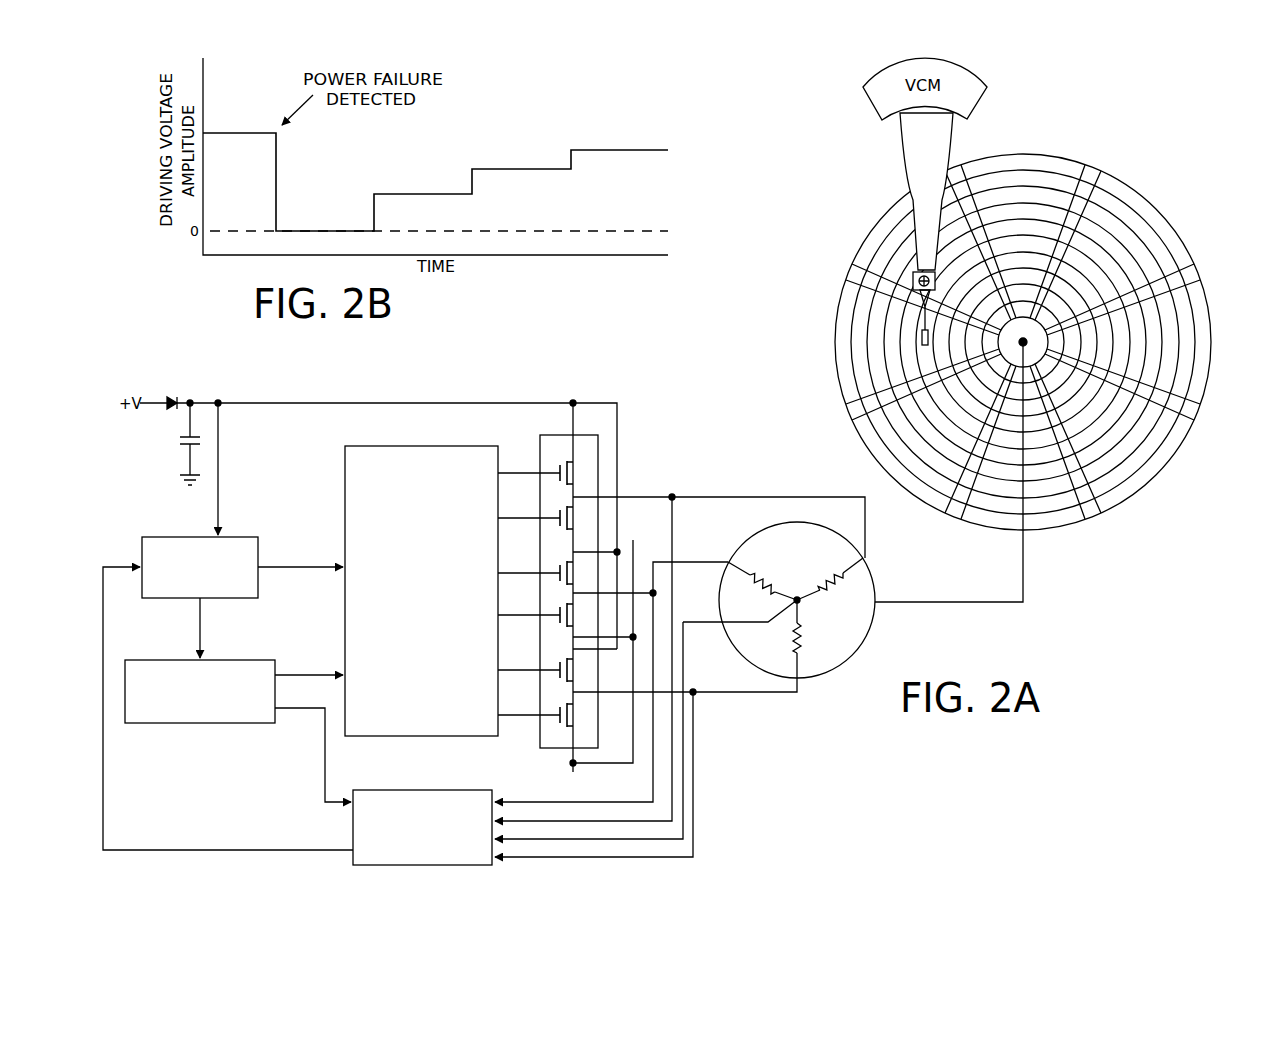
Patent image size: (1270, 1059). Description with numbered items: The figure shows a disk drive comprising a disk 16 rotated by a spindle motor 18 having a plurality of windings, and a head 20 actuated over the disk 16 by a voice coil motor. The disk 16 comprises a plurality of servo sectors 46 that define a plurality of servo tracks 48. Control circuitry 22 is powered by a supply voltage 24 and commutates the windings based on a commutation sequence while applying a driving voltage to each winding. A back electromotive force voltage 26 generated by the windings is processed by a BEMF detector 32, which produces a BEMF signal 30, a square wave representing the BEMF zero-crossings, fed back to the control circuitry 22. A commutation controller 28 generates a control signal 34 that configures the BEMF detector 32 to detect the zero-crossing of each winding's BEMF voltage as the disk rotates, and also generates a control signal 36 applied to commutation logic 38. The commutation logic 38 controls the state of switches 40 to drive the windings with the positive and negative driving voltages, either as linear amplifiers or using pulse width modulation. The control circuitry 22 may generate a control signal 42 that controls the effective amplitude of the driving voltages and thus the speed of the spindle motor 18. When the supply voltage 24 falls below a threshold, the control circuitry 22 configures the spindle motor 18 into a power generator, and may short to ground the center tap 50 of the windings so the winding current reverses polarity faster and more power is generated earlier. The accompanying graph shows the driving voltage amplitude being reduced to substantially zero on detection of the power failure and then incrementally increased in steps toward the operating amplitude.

The disk 16 is at (1150, 199).
The spindle motor 18 is at (875, 623).
The head 20 is at (934, 341).
The control circuitry 22 is at (240, 600).
The supply voltage 24 is at (238, 403).
The back electromotive force (BEMF) voltage 26 is at (533, 862).
The commutation controller 28 is at (201, 725).
The BEMF signal 30 is at (230, 850).
The BEMF detector 32 is at (422, 790).
The control signal 34 is at (326, 752).
The control signal 36 is at (300, 672).
The commutation logic 38 is at (419, 446).
The switches 40 is at (557, 435).
The control signal 42 is at (293, 566).
The servo sectors 46 is at (1101, 534).
The servo tracks 48 is at (1020, 178).
The center tap 50 is at (803, 604).